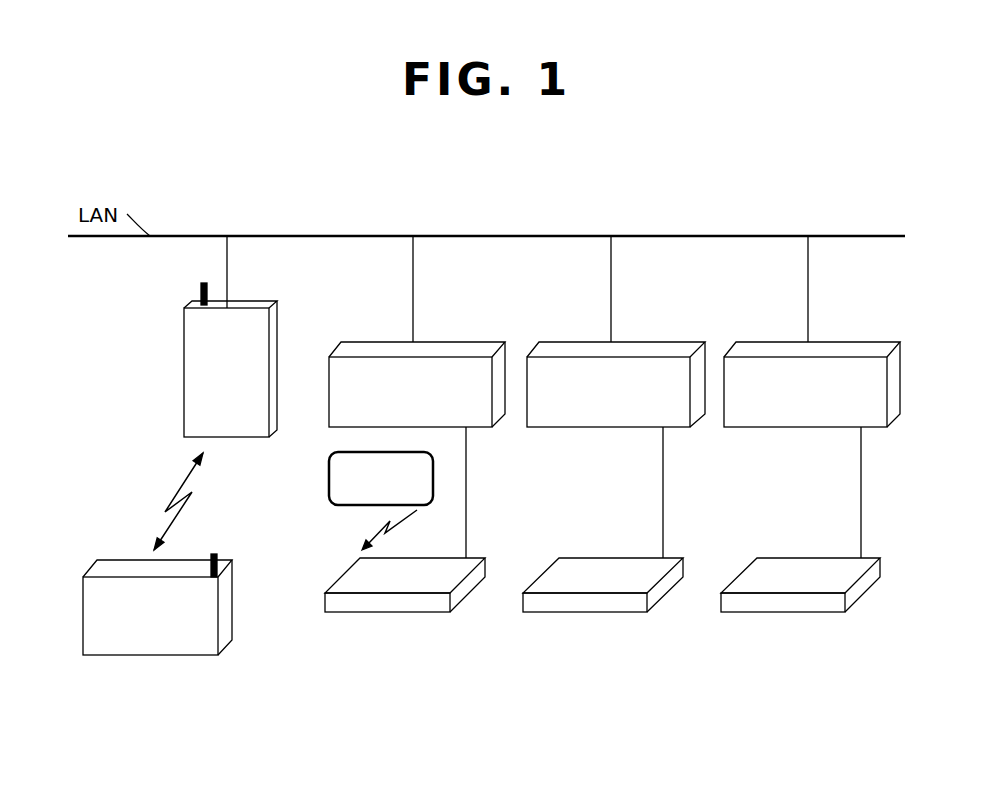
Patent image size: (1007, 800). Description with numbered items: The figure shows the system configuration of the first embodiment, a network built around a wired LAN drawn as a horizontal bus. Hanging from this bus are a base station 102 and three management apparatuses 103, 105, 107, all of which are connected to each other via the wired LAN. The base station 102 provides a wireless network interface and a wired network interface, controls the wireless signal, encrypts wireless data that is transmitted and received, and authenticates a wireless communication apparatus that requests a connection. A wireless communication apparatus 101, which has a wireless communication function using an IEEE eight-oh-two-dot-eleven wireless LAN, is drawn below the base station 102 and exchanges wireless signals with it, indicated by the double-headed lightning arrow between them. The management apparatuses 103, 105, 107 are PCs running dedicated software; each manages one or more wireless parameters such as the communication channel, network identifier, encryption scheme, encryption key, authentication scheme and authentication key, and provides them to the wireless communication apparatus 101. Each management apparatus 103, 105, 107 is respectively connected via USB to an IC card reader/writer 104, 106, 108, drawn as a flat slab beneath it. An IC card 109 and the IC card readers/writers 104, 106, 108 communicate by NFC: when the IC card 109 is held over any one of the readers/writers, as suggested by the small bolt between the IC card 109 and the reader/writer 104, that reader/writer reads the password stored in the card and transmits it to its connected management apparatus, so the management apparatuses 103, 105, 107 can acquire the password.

The wireless communication apparatus 101 is at (232, 585).
The base station 102 is at (278, 318).
The management apparatus 103 is at (468, 342).
The IC card reader/writer 104 is at (486, 558).
The management apparatus 105 is at (666, 342).
The IC card reader/writer 106 is at (594, 558).
The management apparatus 107 is at (863, 342).
The IC card reader/writer 108 is at (794, 558).
The IC card 109 is at (329, 478).